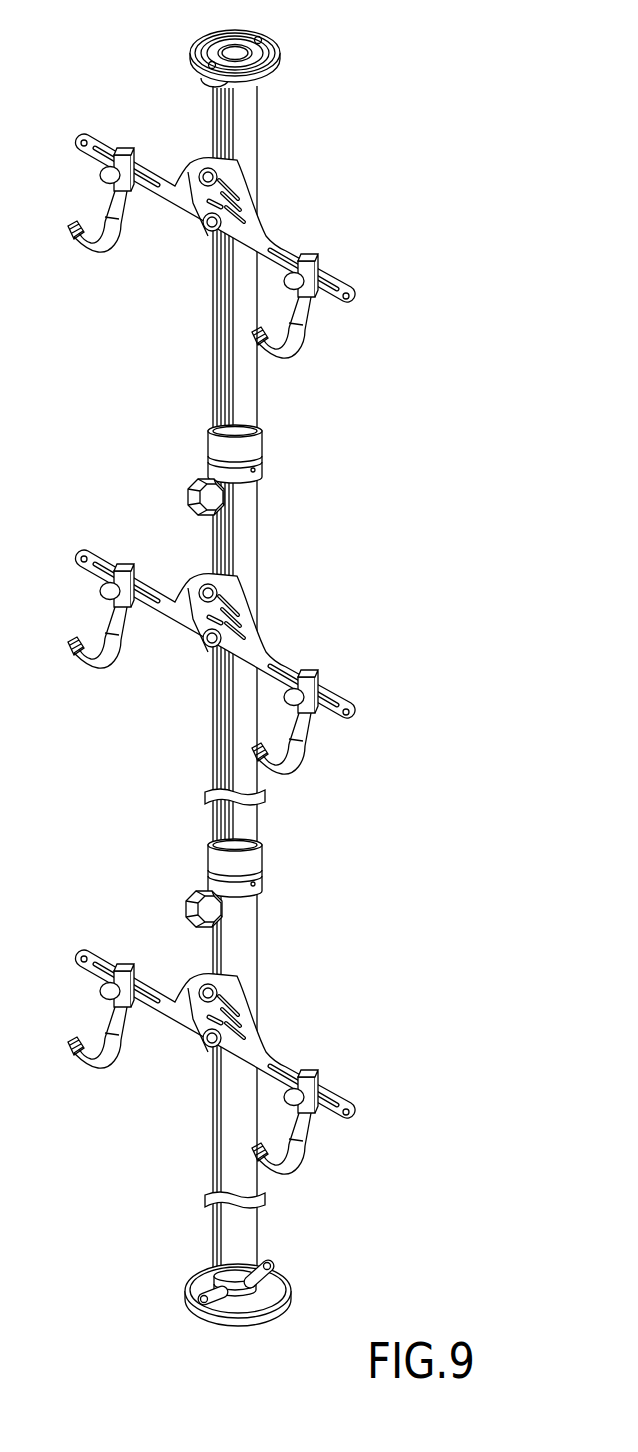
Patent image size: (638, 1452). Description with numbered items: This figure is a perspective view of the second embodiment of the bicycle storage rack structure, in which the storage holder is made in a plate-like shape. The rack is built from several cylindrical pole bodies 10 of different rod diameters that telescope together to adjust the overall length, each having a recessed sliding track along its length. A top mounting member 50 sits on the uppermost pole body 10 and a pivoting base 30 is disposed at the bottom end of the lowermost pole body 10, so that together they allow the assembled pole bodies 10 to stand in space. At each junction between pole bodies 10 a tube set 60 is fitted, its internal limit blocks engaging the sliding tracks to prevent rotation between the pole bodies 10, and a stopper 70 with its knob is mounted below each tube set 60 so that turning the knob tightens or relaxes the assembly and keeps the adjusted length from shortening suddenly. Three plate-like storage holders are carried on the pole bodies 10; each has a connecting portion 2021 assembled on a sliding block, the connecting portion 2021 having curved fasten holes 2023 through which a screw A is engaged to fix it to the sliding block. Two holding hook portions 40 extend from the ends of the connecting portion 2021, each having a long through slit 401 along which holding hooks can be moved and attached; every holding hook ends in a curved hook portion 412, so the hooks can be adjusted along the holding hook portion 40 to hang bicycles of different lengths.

The pole body 10 is at (257, 147).
The pivoting base 30 is at (297, 1277).
The holding hook portion 40 is at (290, 242).
The long through slit 401 is at (328, 300).
The hook portion 412 is at (88, 210).
The top mounting member 50 is at (190, 62).
The tube set 60 is at (263, 452).
The stopper 70 is at (180, 488).
The connecting portion 2021 is at (205, 166).
The fasten hole 2023 is at (186, 178).
The screw A is at (196, 232).